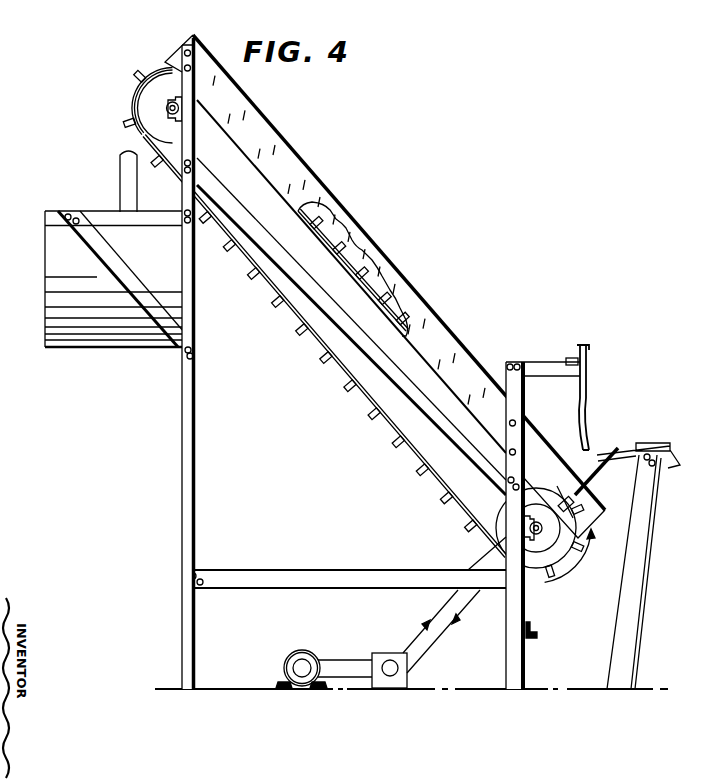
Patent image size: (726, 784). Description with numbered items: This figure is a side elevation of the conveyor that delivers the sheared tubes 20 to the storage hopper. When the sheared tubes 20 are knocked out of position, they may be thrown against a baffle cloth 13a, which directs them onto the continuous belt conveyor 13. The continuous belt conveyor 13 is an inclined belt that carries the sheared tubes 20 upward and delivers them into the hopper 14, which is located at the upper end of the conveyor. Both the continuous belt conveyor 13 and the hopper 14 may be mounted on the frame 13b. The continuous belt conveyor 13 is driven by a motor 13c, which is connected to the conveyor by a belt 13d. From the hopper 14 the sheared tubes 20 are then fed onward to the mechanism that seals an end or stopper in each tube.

The continuous belt conveyor 13 is at (296, 142).
The baffle cloth 13a is at (590, 382).
The frame 13b is at (183, 425).
The motor 13c is at (305, 650).
The belt 13d is at (476, 612).
The hopper 14 is at (60, 349).
The sheared tubes 20 is at (118, 170).